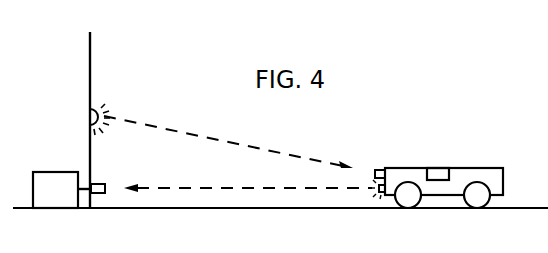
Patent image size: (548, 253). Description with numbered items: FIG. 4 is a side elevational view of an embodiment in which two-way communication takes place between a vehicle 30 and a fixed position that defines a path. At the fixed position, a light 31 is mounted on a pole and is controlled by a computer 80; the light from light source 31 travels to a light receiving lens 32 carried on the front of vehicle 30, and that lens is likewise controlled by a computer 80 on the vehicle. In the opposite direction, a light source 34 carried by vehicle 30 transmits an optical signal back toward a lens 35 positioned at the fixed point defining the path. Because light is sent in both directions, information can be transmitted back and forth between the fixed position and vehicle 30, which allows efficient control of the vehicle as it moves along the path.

The vehicle 30 is at (469, 168).
The light source 31 is at (101, 98).
The light receiving lens 32 is at (384, 170).
The light source 34 is at (381, 195).
The lens 35 is at (97, 182).
The computer 80 is at (437, 168).